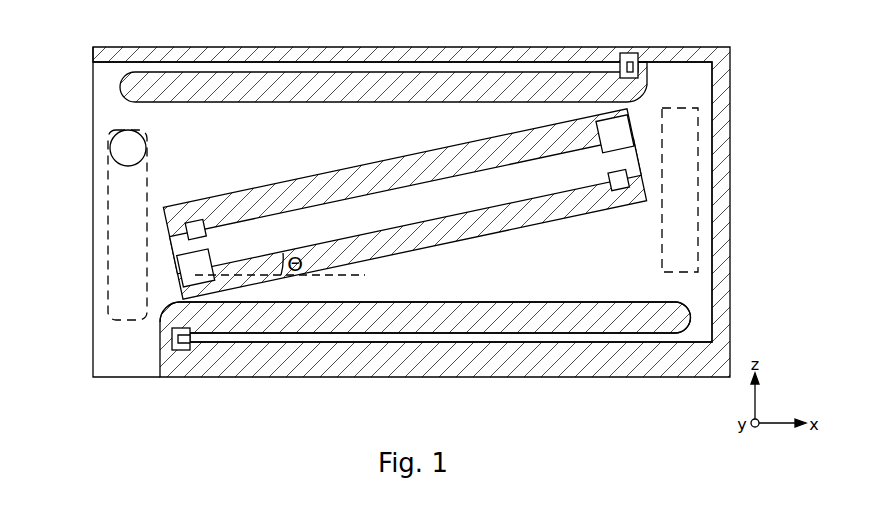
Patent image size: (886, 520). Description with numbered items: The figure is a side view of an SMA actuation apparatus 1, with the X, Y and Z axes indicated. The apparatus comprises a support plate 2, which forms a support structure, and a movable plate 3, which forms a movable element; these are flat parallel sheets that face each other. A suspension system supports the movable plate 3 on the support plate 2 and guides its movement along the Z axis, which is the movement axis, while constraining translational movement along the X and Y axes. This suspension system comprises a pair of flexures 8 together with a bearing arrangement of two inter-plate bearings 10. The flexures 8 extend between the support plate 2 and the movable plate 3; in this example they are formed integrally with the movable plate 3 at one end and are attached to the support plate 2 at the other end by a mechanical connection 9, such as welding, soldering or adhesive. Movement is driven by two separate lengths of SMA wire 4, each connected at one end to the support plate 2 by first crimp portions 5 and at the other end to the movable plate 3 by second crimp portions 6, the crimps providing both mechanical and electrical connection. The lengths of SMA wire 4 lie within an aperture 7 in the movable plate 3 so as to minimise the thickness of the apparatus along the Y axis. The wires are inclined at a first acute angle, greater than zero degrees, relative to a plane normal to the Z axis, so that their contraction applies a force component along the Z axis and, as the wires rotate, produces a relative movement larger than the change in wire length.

The SMA actuation apparatus 1 is at (66, 153).
The support plate 2 is at (723, 127).
The movable plate 3 is at (695, 90).
The SMA wire 4 is at (245, 257).
The first crimp portions 5 is at (193, 222).
The second crimp portions 6 is at (188, 268).
The aperture 7 is at (278, 182).
The flexures 8 is at (358, 63).
The mechanical connection 9 is at (628, 54).
The inter-plate bearings 10 is at (132, 233).